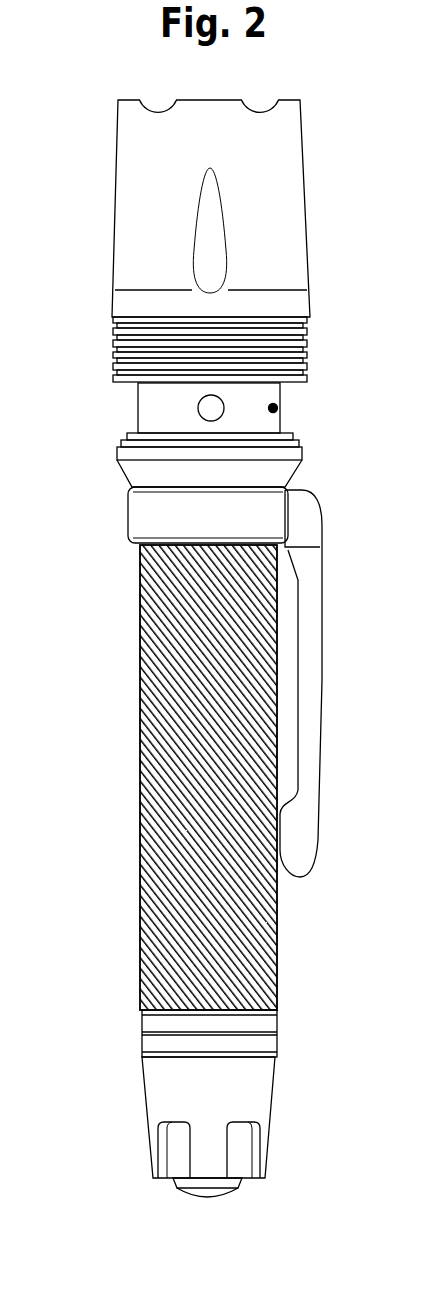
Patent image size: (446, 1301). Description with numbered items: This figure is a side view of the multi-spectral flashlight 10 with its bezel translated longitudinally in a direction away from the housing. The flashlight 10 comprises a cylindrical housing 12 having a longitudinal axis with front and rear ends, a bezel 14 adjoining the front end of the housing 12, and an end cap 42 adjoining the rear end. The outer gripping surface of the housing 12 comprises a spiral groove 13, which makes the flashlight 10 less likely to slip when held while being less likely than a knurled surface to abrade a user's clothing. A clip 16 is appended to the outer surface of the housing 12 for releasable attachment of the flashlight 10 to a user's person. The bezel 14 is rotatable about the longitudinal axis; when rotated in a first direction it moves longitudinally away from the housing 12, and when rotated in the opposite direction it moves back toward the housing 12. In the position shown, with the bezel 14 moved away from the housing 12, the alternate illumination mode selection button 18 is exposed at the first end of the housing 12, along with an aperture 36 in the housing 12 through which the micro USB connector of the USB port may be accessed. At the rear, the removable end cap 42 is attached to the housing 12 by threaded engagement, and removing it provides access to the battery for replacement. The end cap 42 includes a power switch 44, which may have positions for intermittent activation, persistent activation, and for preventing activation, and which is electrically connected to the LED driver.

The multi-spectral flashlight 10 is at (126, 842).
The cylindrical housing 12 is at (140, 715).
The spiral groove 13 is at (240, 945).
The bezel 14 is at (111, 268).
The clip 16 is at (322, 675).
The alternate illumination mode selection button 18 is at (197, 406).
The aperture 36 is at (278, 408).
The end cap 42 is at (142, 1077).
The power switch 44 is at (240, 1190).